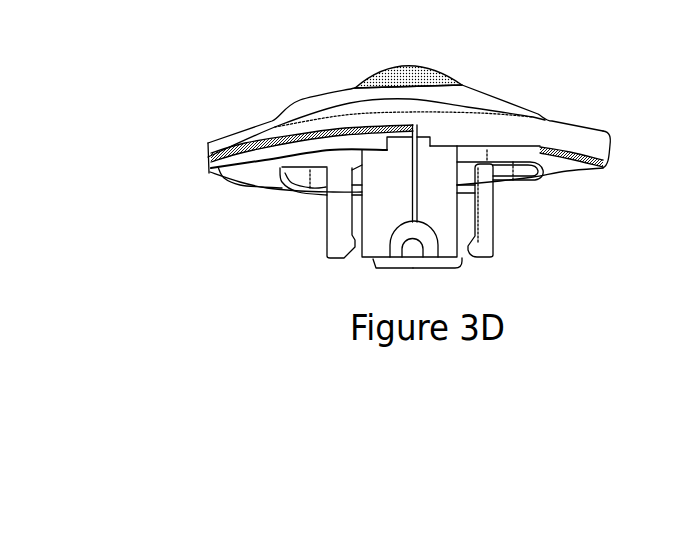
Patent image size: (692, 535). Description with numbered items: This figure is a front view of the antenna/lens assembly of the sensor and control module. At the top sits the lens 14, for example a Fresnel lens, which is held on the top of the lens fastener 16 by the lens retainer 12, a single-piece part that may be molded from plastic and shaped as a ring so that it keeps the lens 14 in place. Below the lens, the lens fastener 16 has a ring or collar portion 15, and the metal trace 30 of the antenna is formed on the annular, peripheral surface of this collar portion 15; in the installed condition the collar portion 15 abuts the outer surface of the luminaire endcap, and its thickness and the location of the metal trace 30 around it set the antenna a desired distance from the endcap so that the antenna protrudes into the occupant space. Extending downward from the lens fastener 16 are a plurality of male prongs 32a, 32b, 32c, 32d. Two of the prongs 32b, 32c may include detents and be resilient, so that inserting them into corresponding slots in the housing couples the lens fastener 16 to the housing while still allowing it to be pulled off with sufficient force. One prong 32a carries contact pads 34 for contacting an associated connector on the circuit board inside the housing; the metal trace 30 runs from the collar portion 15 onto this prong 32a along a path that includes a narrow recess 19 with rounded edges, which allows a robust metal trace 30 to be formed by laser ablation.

The lens retainer 12 is at (297, 100).
The lens 14 is at (447, 70).
The collar portion 15 is at (612, 146).
The lens fastener 16 is at (570, 118).
The narrow recess 19 is at (427, 133).
The metal trace 30 is at (235, 147).
The male prong 32a is at (373, 260).
The male prong 32b is at (327, 208).
The male prong 32c is at (495, 217).
The male prong 32d is at (458, 267).
The contact pads 34 is at (395, 258).